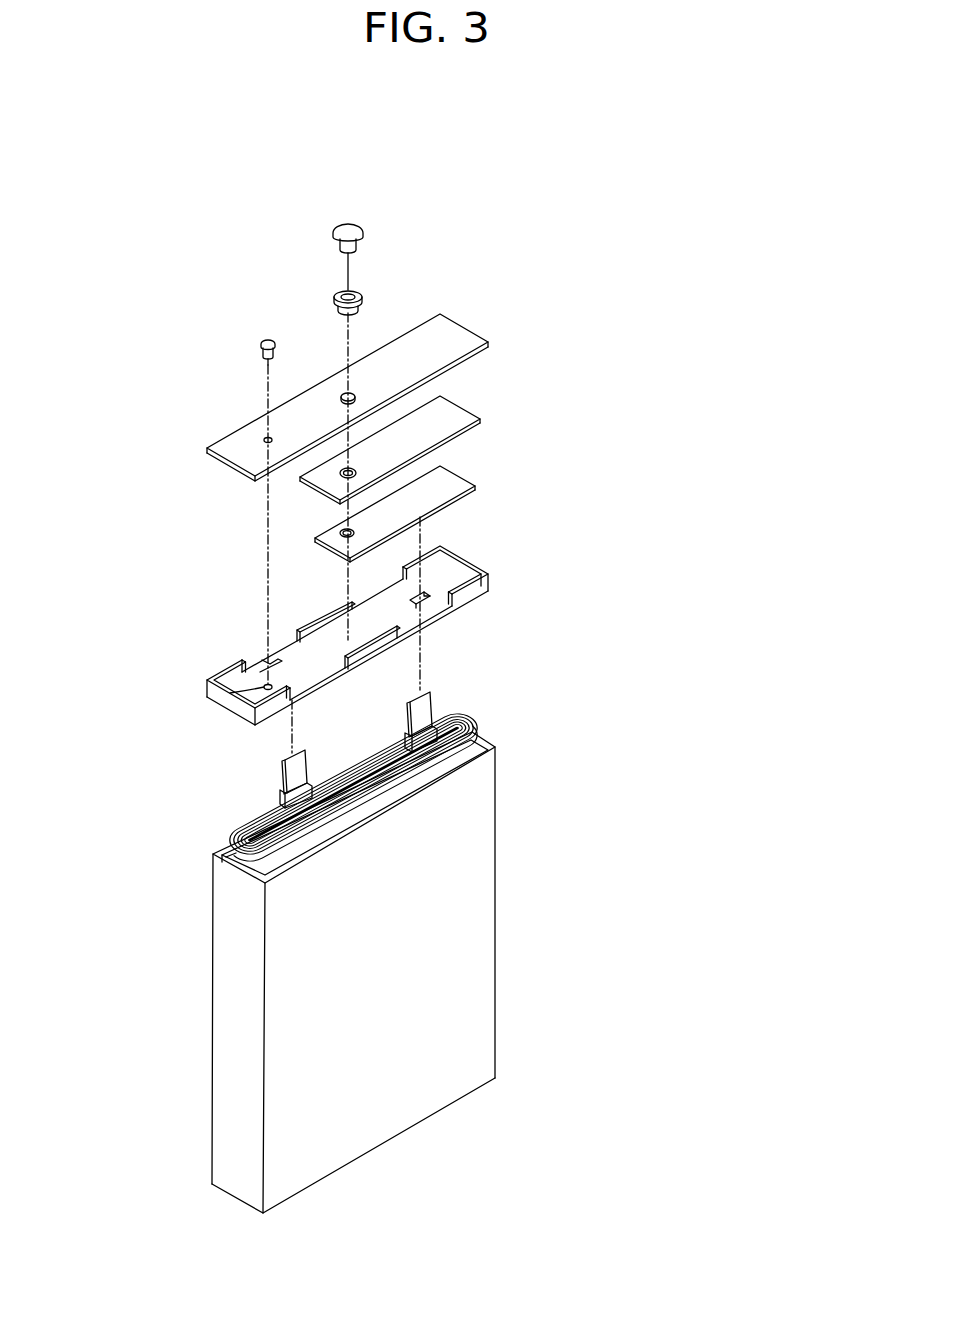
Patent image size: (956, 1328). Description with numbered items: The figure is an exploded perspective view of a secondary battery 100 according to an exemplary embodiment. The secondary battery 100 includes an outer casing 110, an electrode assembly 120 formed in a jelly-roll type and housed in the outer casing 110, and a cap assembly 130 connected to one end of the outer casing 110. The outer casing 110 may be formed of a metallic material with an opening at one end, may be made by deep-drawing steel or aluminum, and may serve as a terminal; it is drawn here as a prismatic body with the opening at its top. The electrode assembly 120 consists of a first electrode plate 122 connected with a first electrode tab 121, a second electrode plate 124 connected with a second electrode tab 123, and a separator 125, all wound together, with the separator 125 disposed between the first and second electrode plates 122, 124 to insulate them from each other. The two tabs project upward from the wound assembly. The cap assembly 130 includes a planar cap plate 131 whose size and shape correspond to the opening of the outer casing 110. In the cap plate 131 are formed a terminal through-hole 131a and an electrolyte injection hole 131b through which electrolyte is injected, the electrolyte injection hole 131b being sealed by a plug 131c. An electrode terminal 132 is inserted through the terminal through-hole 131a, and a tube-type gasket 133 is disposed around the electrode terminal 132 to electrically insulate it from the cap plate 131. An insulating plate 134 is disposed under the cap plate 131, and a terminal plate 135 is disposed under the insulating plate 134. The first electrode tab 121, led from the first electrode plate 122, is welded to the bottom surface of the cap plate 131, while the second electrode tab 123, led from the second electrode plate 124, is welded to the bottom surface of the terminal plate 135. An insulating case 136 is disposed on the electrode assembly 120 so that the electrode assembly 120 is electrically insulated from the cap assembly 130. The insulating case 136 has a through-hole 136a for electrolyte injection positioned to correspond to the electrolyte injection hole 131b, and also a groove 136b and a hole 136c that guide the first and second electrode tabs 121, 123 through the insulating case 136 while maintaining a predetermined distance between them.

The secondary battery 100 is at (131, 235).
The outer casing 110 is at (487, 898).
The electrode assembly 120 is at (550, 660).
The first electrode tab 121 is at (282, 777).
The first electrode plate 122 is at (472, 733).
The second electrode tab 123 is at (414, 713).
The second electrode plate 124 is at (450, 718).
The separator 125 is at (465, 723).
The cap assembly 130 is at (612, 203).
The cap plate 131 is at (453, 337).
The terminal through-hole 131a is at (352, 386).
The electrolyte injection hole 131b is at (262, 430).
The plug 131c is at (263, 338).
The electrode terminal 132 is at (370, 221).
The gasket 133 is at (357, 293).
The insulating plate 134 is at (460, 412).
The terminal plate 135 is at (453, 475).
The insulating case 136 is at (453, 567).
The through-hole 136a is at (253, 697).
The groove 136b is at (272, 657).
The hole 136c is at (410, 605).